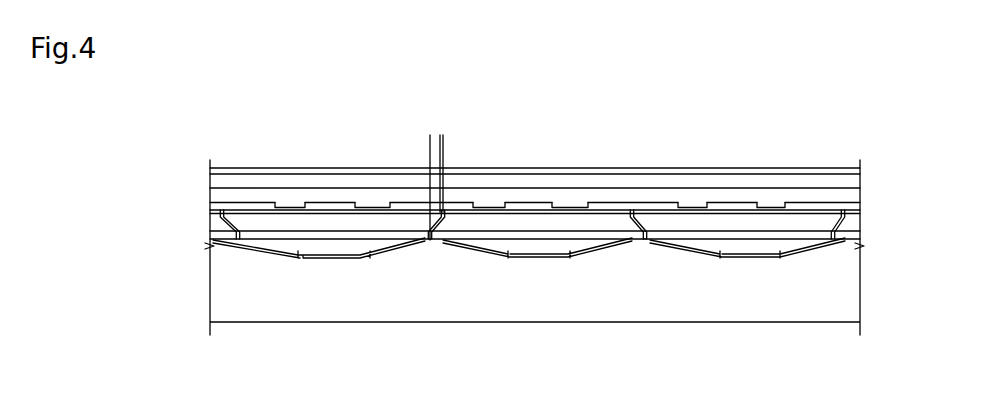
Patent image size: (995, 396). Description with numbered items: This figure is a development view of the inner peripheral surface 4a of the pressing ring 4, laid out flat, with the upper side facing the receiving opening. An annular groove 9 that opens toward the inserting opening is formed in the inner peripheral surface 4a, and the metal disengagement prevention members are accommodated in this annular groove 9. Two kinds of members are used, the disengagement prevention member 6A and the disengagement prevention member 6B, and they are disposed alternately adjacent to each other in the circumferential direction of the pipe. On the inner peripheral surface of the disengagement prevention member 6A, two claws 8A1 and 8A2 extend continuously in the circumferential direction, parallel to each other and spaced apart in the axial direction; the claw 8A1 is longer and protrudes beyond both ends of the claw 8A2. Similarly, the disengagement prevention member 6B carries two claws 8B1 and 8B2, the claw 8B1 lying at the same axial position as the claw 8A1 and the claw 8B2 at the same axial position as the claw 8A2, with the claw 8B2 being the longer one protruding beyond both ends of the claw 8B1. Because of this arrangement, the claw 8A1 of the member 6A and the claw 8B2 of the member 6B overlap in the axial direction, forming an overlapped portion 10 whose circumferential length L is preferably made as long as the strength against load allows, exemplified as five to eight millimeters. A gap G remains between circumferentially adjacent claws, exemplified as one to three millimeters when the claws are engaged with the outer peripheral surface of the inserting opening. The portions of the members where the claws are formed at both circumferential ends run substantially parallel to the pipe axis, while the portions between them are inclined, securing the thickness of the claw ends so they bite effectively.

The pressing ring 4 is at (645, 170).
The inner peripheral surface 4a is at (596, 179).
The annular groove 9 is at (738, 208).
The claw 8A1 is at (287, 210).
The claw 8B1 is at (493, 209).
The claw 8A2 is at (379, 239).
The claw 8B2 is at (587, 239).
The overlapped portion 10 is at (427, 249).
The disengagement prevention member 6A is at (278, 262).
The disengagement prevention member 6B is at (480, 262).
The length of the overlapped portion L is at (430, 140).
The gap G is at (465, 140).